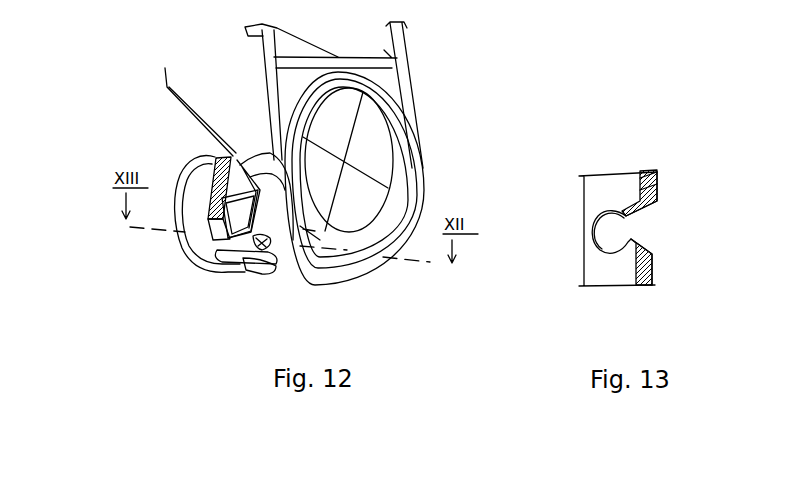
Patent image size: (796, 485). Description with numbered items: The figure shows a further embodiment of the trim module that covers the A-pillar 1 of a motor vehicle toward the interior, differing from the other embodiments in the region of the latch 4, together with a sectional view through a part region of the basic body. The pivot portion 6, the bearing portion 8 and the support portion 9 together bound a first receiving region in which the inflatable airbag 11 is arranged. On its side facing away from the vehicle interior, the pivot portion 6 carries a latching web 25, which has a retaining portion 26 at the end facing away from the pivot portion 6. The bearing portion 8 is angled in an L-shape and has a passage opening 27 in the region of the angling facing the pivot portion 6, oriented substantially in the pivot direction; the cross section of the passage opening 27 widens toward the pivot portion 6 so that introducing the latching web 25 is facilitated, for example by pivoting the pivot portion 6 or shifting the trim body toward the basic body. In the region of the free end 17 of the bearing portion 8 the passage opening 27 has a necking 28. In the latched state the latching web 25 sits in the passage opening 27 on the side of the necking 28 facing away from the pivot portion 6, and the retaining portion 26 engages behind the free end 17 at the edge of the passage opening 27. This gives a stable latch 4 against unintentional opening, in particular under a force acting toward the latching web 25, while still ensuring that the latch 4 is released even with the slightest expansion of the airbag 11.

In FIG. 12, the A-pillar 1 is at (158, 105).
In FIG. 12, the latch 4 is at (244, 287).
In FIG. 12, the pivot portion 6 is at (417, 161).
In FIG. 12, the bearing portion 8 is at (284, 221).
In FIG. 13, the bearing portion 8 is at (658, 145).
In FIG. 12, the support portion 9 is at (382, 62).
In FIG. 12, the inflatable airbag 11 is at (376, 114).
In FIG. 12, the free end 17 is at (268, 270).
In FIG. 13, the free end 17 is at (597, 191).
In FIG. 12, the latching web 25 is at (243, 262).
In FIG. 12, the retaining portion 26 is at (268, 215).
In FIG. 13, the passage opening 27 is at (676, 225).
In FIG. 13, the necking 28 is at (628, 197).